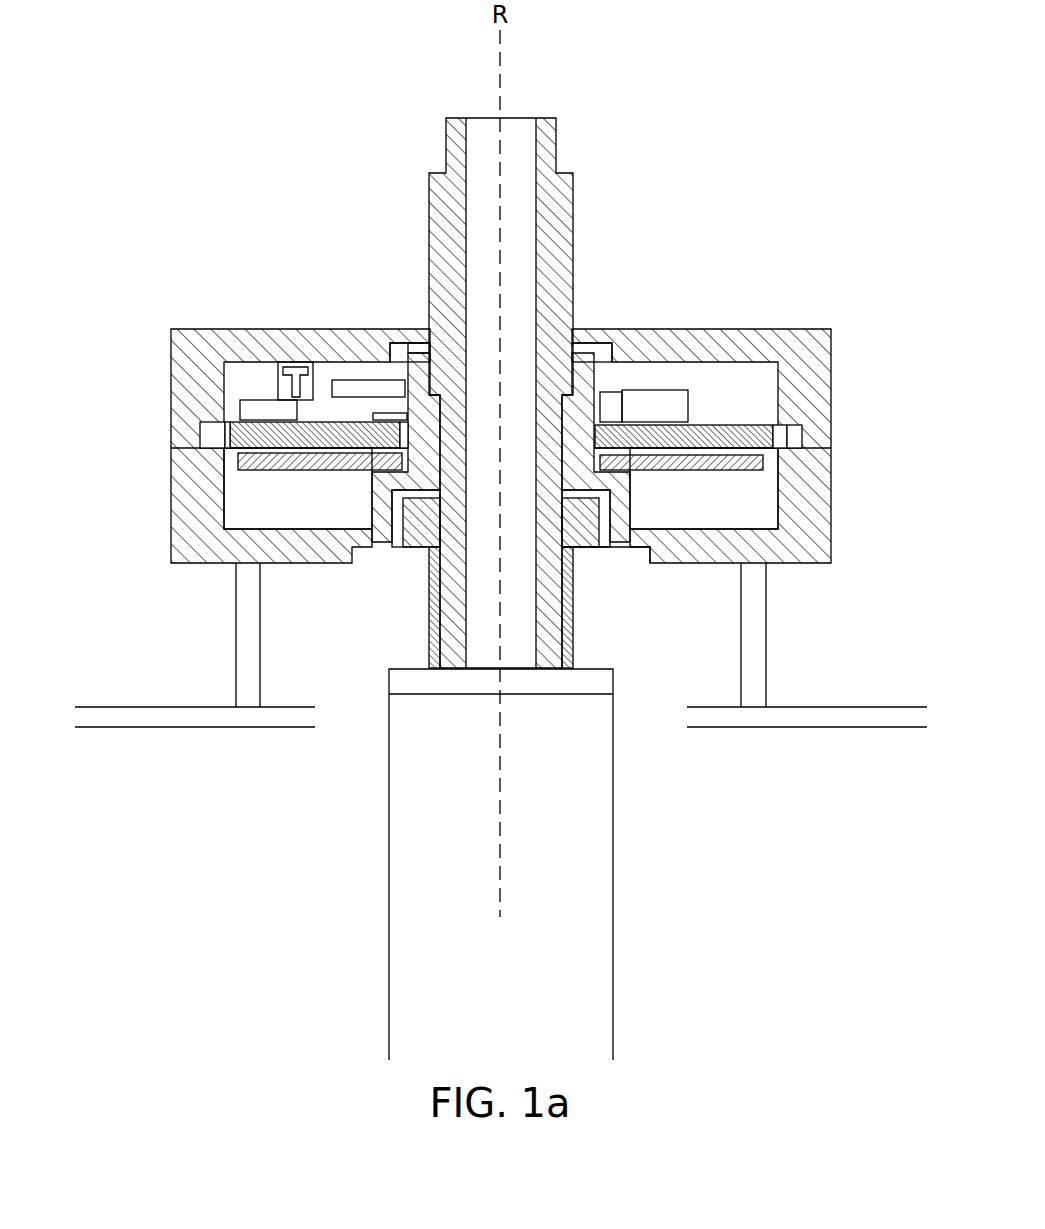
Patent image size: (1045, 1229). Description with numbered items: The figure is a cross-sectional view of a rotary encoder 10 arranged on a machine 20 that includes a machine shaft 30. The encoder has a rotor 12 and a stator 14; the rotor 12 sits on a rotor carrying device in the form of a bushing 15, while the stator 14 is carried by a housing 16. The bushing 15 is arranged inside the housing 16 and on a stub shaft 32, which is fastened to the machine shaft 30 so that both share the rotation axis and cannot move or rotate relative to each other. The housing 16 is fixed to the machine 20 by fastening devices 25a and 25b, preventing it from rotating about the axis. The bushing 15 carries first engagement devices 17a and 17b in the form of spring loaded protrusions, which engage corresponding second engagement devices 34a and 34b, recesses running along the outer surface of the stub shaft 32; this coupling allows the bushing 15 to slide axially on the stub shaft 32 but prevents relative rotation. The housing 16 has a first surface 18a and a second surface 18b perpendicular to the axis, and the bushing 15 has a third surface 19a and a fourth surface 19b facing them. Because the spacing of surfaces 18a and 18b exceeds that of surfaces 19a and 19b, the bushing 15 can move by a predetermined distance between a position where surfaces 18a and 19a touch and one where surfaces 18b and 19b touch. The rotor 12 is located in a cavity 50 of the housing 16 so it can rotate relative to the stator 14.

The rotary encoder 10 is at (124, 277).
The rotor 12 is at (265, 477).
The stator 14 is at (740, 414).
The bushing 15 is at (369, 501).
The housing 16 is at (745, 326).
The first engagement device 17a is at (421, 521).
The first engagement device 17b is at (577, 511).
The first surface 18a is at (411, 350).
The second surface 18b is at (593, 546).
The third surface 19a is at (422, 342).
The fourth surface 19b is at (584, 554).
The machine 20 is at (103, 705).
The fastening device 25a is at (233, 656).
The fastening device 25b is at (768, 645).
The machine shaft 30 is at (387, 917).
The stub shaft 32 is at (576, 224).
The second engagement device 34a is at (431, 641).
The second engagement device 34b is at (571, 633).
The cavity 50 is at (277, 503).